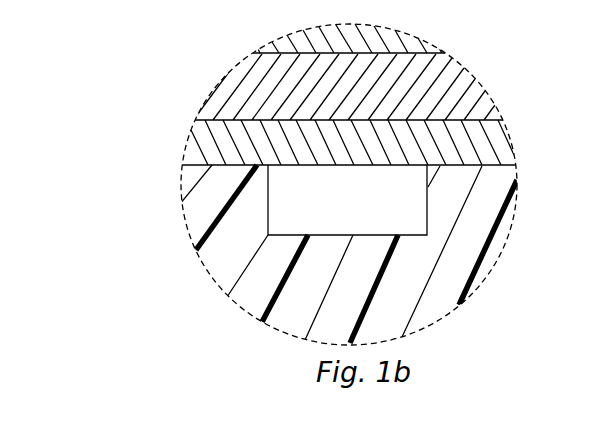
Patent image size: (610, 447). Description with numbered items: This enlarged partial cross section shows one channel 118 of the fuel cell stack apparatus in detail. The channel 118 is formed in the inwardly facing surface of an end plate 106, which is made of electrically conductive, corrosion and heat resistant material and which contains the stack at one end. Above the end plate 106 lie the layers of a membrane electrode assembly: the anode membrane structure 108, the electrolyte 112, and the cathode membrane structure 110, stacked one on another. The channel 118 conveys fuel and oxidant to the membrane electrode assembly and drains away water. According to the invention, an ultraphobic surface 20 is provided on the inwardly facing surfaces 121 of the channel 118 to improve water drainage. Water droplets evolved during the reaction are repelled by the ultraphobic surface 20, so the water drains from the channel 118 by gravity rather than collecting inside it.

The end plate 106 is at (488, 260).
The anode membrane structure 108 is at (510, 148).
The cathode membrane structure 110 is at (433, 43).
The electrolyte 112 is at (492, 98).
The channel 118 is at (407, 218).
The ultraphobic surface 20 is at (423, 194).
The inwardly facing surface of channel 121 is at (298, 229).